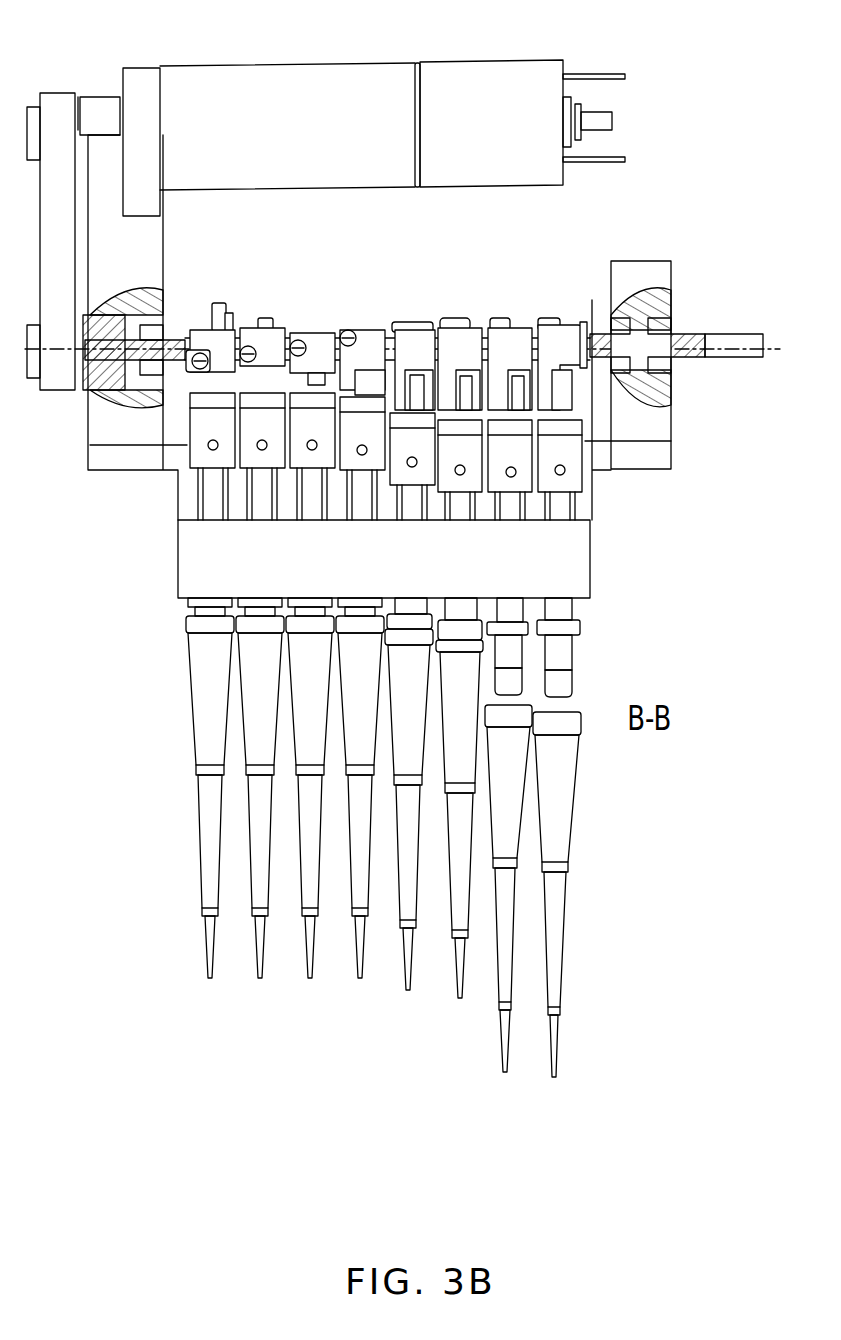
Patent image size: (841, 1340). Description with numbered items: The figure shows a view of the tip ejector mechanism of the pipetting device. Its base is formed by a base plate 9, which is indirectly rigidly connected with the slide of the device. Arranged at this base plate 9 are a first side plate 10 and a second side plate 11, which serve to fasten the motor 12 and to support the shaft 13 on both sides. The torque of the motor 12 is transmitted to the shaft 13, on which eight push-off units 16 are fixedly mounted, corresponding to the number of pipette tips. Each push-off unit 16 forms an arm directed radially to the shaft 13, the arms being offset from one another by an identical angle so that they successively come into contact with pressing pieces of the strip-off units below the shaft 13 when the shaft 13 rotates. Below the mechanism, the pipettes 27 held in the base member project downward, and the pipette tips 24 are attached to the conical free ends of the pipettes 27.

The base plate 9 is at (645, 455).
The first side plate 10 is at (637, 270).
The second side plate 11 is at (126, 430).
The motor 12 is at (245, 130).
The shaft 13 is at (656, 340).
The push-off units 16 is at (550, 340).
The pipette tips 24 is at (217, 732).
The pipettes 27 is at (573, 650).